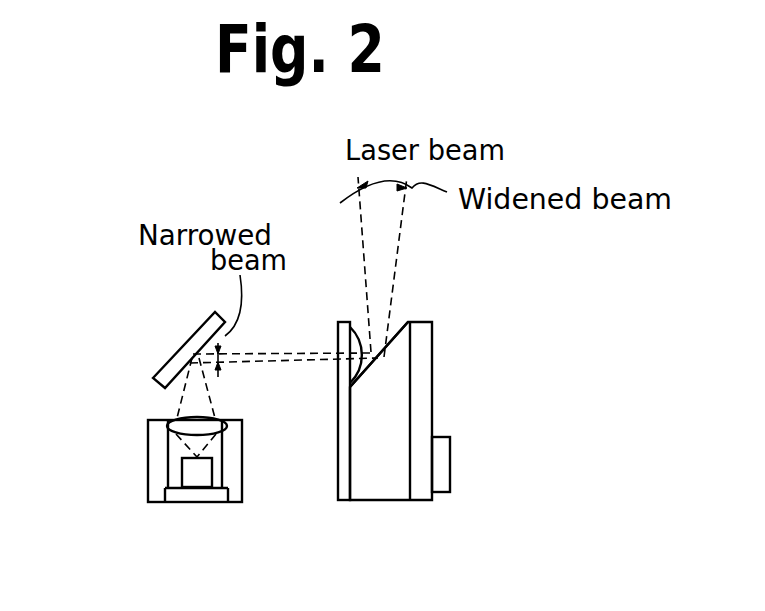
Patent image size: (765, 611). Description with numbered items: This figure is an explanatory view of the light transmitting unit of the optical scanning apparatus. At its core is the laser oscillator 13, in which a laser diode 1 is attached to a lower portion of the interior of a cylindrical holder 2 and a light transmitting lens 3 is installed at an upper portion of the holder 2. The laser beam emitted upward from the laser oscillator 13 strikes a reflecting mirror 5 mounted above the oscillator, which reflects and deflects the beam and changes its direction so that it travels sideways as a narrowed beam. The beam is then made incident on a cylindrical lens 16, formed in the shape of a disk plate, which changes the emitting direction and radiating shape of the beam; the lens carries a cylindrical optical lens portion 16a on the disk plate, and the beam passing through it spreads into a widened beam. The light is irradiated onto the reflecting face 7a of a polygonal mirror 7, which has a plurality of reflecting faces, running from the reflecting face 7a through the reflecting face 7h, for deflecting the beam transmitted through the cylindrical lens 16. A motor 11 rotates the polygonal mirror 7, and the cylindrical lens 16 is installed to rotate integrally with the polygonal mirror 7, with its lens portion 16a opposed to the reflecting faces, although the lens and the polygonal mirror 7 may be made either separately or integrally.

The laser diode 1 is at (218, 472).
The holder 2 is at (235, 455).
The light transmitting lens 3 is at (190, 425).
The reflecting mirror 5 is at (183, 343).
The polygonal mirror 7 is at (480, 443).
The reflecting face 7a is at (480, 411).
The reflecting face 7h is at (398, 385).
The motor 11 is at (443, 460).
The laser oscillator 13 is at (186, 437).
The cylindrical lens 16 is at (338, 338).
The optical lens portion 16a is at (358, 330).